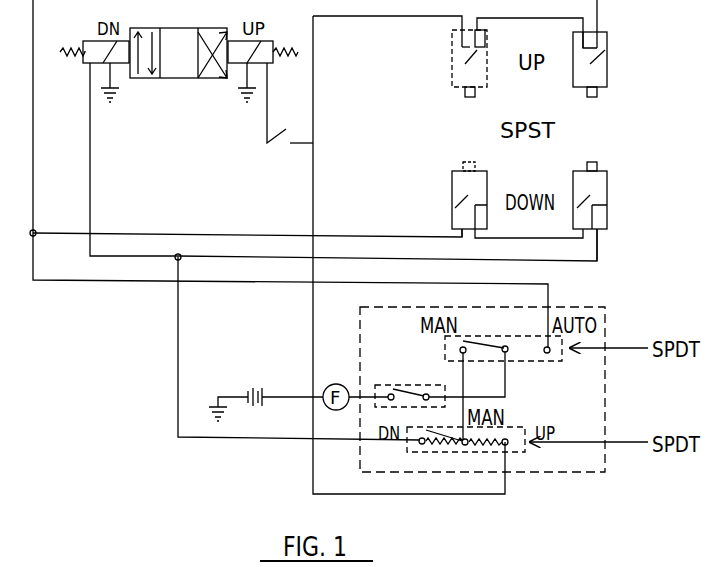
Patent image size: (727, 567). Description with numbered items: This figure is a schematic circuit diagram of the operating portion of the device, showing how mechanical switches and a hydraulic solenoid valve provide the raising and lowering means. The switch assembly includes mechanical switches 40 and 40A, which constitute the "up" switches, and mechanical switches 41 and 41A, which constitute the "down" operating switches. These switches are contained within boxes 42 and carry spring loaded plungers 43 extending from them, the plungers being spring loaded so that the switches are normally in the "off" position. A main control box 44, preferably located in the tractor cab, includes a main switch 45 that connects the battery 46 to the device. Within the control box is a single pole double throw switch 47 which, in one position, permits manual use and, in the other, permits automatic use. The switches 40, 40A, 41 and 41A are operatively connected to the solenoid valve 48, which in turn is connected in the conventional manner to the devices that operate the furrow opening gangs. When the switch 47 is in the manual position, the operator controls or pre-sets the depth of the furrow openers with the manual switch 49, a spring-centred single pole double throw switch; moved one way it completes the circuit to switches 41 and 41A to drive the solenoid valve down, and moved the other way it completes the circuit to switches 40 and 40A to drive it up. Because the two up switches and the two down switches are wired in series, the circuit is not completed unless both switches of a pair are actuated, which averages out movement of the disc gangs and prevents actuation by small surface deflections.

The mechanical switch 40 is at (452, 71).
The mechanical switch 40A is at (607, 80).
The mechanical switch 41 is at (452, 209).
The mechanical switch 41A is at (607, 220).
The box 42 is at (600, 233).
The spring loaded plunger 43 is at (475, 97).
The main control box 44 is at (607, 349).
The main switch 45 is at (428, 383).
The battery 46 is at (258, 385).
The single pole double throw switch 47 is at (530, 362).
The solenoid valve 48 is at (198, 79).
The manual switch 49 is at (522, 452).